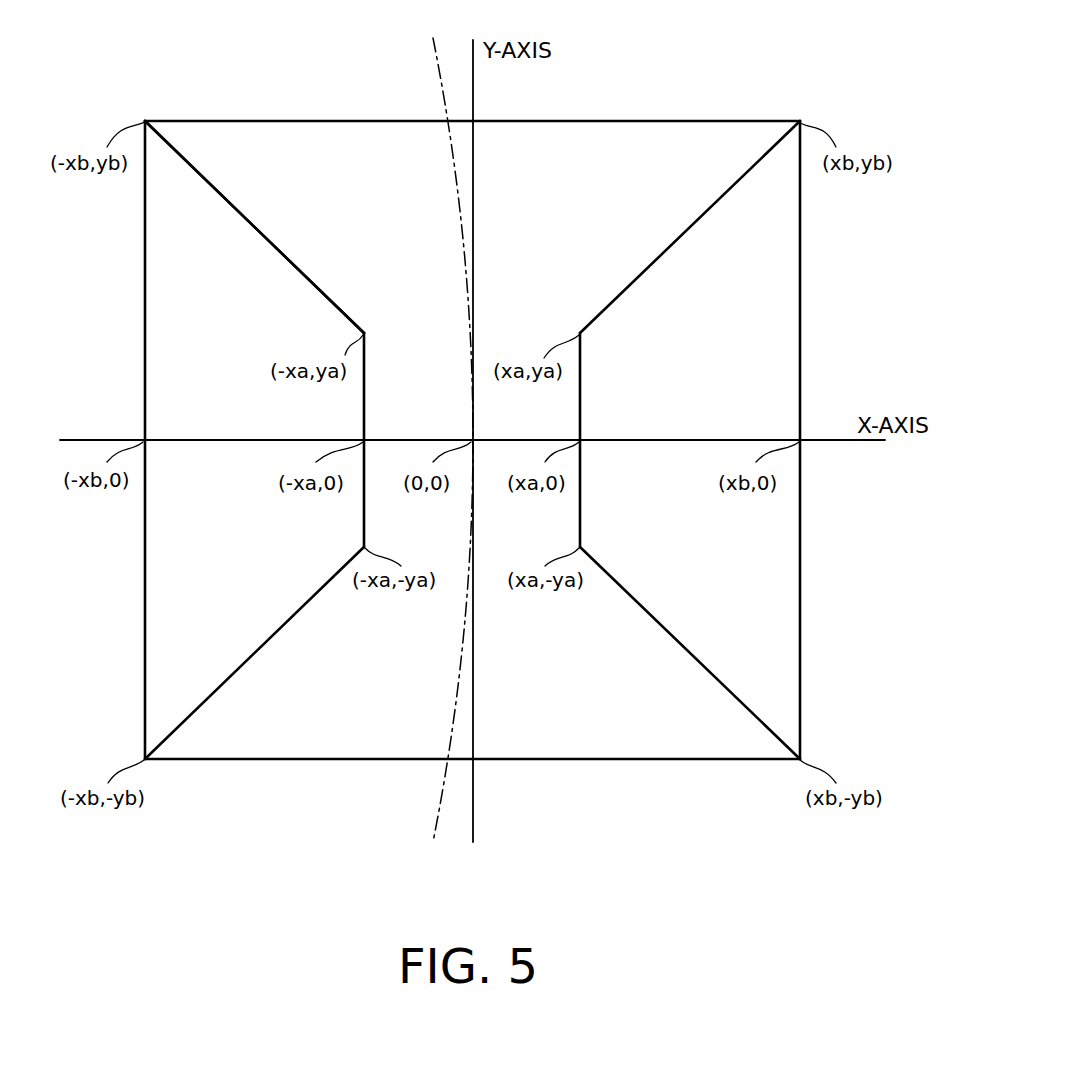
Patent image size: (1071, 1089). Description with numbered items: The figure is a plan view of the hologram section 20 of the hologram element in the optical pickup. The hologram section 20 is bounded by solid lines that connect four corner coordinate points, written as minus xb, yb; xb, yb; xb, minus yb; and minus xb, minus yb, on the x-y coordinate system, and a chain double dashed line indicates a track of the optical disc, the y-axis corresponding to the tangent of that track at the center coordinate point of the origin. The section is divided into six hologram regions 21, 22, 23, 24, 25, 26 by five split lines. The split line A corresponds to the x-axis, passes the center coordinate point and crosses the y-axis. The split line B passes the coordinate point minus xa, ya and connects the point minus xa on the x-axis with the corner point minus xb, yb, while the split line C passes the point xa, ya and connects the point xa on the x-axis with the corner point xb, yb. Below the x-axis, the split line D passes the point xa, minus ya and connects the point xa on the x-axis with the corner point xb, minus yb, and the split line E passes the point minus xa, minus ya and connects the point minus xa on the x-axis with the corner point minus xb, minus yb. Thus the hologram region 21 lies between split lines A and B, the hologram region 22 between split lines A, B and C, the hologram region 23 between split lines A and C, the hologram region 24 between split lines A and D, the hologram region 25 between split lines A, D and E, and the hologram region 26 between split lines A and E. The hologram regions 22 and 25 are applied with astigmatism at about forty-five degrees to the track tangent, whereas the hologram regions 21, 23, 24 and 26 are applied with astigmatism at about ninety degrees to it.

The hologram section 20 is at (778, 73).
The hologram region 21 is at (150, 287).
The hologram region 22 is at (314, 126).
The hologram region 23 is at (798, 286).
The hologram region 24 is at (798, 567).
The hologram region 25 is at (313, 748).
The hologram region 26 is at (150, 564).
The split line A is at (188, 438).
The split line B is at (291, 262).
The split line C is at (653, 262).
The split line D is at (656, 620).
The split line E is at (289, 620).